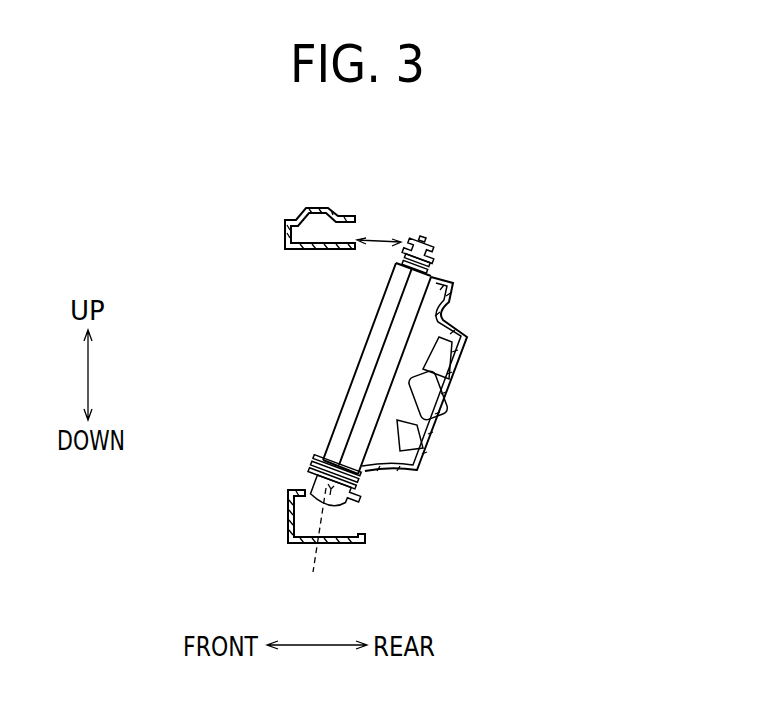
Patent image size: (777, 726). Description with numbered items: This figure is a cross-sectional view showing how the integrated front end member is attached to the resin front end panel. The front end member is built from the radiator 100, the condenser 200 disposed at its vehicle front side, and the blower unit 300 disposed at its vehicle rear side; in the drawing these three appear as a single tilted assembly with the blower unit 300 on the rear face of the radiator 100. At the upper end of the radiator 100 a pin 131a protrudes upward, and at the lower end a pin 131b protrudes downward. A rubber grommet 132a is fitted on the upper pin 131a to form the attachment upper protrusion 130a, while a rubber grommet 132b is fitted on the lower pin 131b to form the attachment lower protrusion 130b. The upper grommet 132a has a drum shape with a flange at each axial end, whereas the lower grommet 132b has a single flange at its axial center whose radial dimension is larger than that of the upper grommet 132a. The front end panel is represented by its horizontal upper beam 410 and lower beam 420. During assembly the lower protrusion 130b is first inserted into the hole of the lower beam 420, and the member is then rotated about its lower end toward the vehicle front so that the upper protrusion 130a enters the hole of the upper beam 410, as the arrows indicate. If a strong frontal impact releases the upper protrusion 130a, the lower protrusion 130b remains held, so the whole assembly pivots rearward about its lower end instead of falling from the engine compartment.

The radiator 100 is at (398, 322).
The condenser 200 is at (357, 385).
The blower unit 300 is at (455, 323).
The attachment upper protrusion 130a is at (450, 265).
The attachment lower protrusion 130b is at (354, 515).
The pin 131a is at (423, 240).
The pin 131b is at (322, 543).
The upper grommet 132a is at (438, 238).
The lower grommet 132b is at (350, 497).
The upper beam 410 is at (286, 240).
The lower beam 420 is at (290, 507).